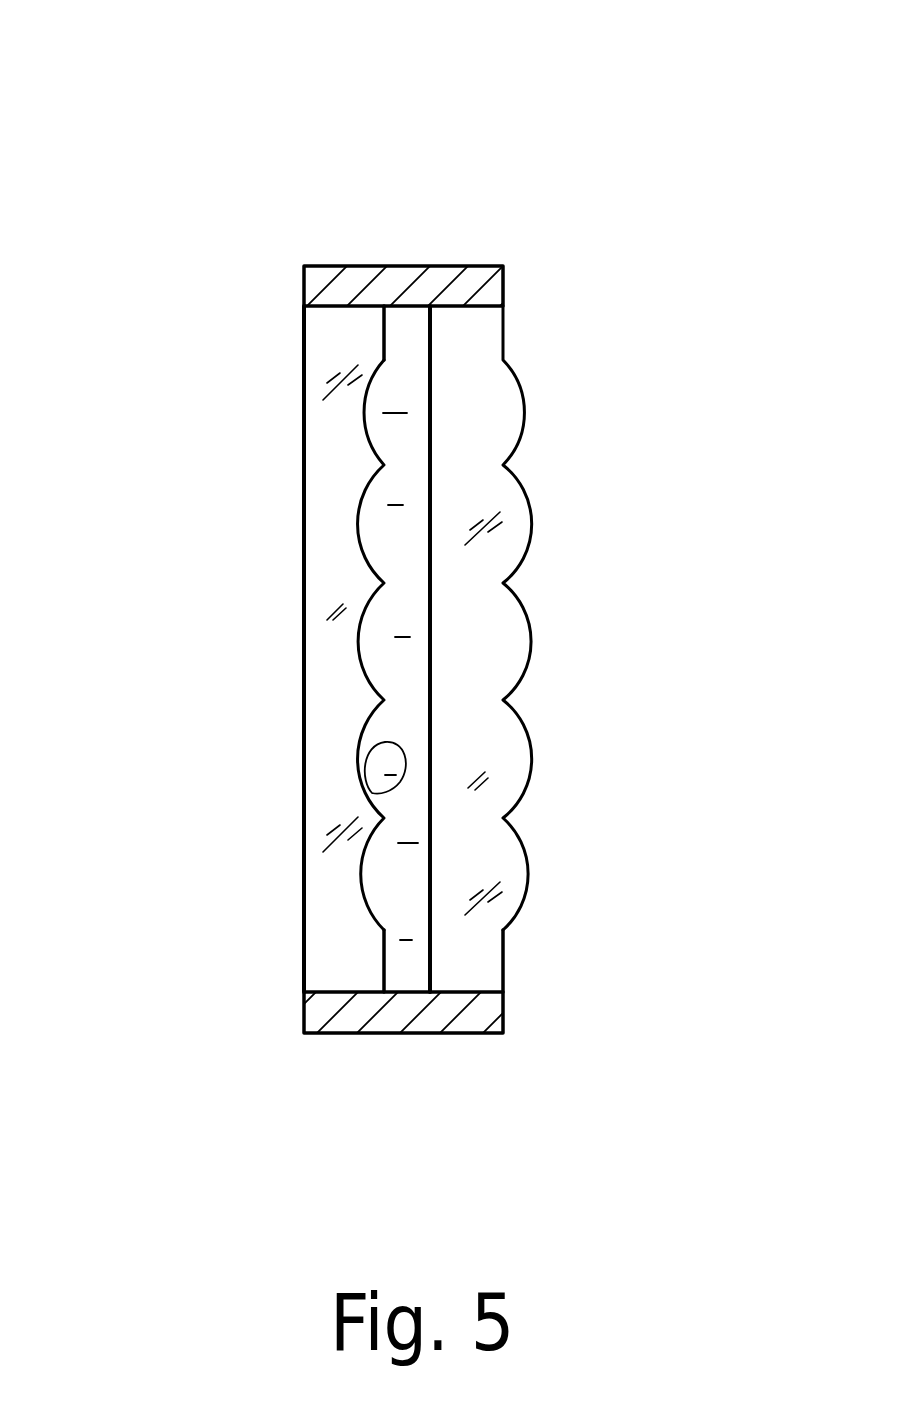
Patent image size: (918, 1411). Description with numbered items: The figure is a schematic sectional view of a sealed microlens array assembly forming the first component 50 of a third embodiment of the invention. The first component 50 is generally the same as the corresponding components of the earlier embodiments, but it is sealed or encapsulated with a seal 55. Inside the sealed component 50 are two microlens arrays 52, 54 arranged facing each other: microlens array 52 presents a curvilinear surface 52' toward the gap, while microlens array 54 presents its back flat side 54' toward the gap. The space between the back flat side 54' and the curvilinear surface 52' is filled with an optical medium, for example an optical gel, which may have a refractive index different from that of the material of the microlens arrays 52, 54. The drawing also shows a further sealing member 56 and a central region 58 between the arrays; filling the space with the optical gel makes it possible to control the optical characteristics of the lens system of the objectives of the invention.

The first component 50 is at (556, 146).
The microlens array 52 is at (216, 649).
The curvilinear surface of the microlens array 52' is at (239, 645).
The microlens array 54 is at (622, 587).
The back flat side of the microlens array 54' is at (555, 1040).
The seal 55 is at (304, 288).
The bottom end plate 56 is at (385, 858).
The central channel 58 is at (393, 350).